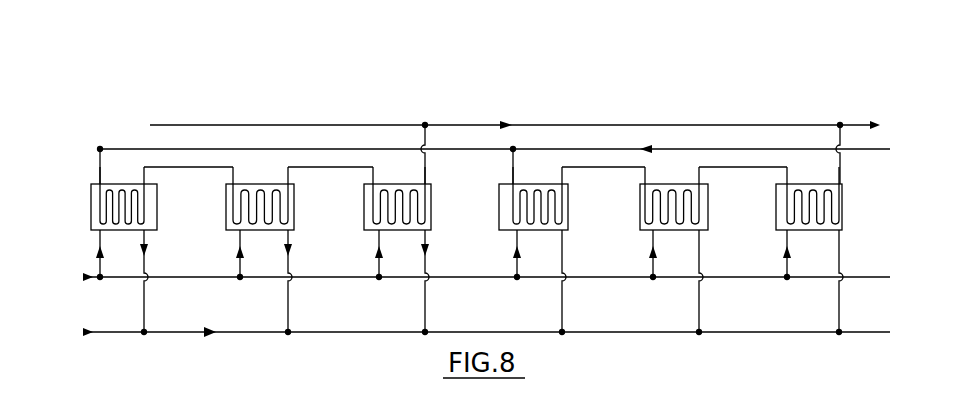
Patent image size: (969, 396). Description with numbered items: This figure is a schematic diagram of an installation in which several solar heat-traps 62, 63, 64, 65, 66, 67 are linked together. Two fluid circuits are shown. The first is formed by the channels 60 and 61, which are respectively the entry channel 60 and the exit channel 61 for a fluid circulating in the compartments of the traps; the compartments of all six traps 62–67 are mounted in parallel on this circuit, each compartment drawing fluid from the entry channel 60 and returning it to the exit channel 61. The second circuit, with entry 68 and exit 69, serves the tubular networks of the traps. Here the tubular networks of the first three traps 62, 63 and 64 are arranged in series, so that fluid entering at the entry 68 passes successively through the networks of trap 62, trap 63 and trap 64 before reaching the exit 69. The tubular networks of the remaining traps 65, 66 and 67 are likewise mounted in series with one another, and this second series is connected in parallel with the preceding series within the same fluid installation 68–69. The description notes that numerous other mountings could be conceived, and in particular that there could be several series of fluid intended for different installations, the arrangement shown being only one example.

The entry channel 60 is at (476, 288).
The exit channel 61 is at (473, 330).
The heat-trap 62 is at (89, 232).
The heat-trap 63 is at (223, 228).
The heat-trap 64 is at (364, 229).
The heat-trap 65 is at (499, 230).
The heat-trap 66 is at (636, 228).
The heat-trap 67 is at (774, 230).
The entry 68 is at (797, 149).
The exit 69 is at (858, 125).